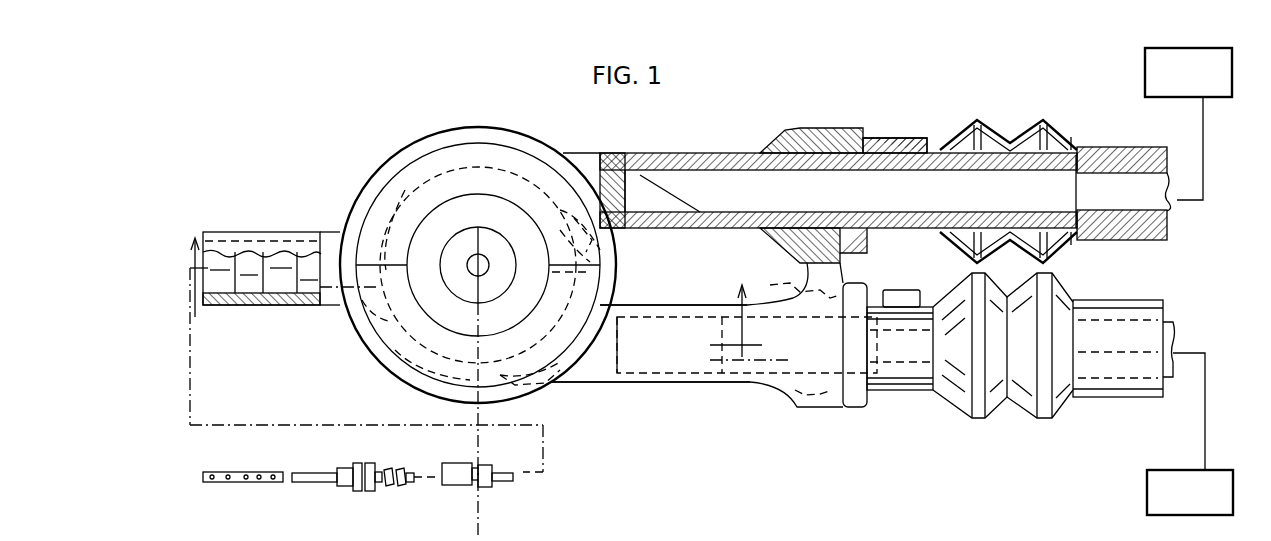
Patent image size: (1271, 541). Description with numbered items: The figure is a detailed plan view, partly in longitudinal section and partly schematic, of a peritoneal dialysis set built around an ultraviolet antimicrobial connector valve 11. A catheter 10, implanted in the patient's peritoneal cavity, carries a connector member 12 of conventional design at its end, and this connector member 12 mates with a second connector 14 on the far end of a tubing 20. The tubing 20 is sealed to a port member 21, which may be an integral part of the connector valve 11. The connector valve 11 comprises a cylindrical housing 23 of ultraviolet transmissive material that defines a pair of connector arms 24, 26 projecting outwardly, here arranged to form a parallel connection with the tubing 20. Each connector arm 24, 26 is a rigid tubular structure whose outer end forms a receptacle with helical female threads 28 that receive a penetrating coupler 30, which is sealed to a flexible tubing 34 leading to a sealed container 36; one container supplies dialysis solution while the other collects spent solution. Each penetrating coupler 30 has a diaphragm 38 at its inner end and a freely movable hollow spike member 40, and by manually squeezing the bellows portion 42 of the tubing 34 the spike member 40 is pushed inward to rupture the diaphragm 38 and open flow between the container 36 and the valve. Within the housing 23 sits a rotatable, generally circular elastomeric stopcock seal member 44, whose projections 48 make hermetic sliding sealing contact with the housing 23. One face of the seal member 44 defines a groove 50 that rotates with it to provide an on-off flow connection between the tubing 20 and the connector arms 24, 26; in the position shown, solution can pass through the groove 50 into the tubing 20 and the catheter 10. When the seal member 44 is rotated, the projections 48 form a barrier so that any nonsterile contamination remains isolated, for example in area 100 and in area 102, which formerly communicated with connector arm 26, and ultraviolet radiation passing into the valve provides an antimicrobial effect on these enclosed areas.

The catheter 10 is at (242, 462).
The connector valve 11 is at (432, 126).
The connector member 12 is at (360, 488).
The second connector 14 is at (478, 486).
The tubing 20 is at (266, 222).
The port member 21 is at (276, 306).
The housing 23 is at (553, 385).
The connector arm 24 is at (808, 127).
The connector arm 26 is at (798, 410).
The helical female threads 28 is at (776, 145).
The penetrating coupler 30 is at (872, 130).
The flexible tubing 34 is at (1130, 155).
The sealed container 36 is at (1189, 281).
The diaphragm 38 is at (662, 409).
The hollow spike member 40 is at (970, 200).
The bellows portion 42 is at (1066, 138).
The stopcock seal member 44 is at (412, 320).
The projections 48 is at (360, 298).
The groove 50 is at (488, 157).
The area 100 is at (520, 380).
The area 102 is at (571, 251).